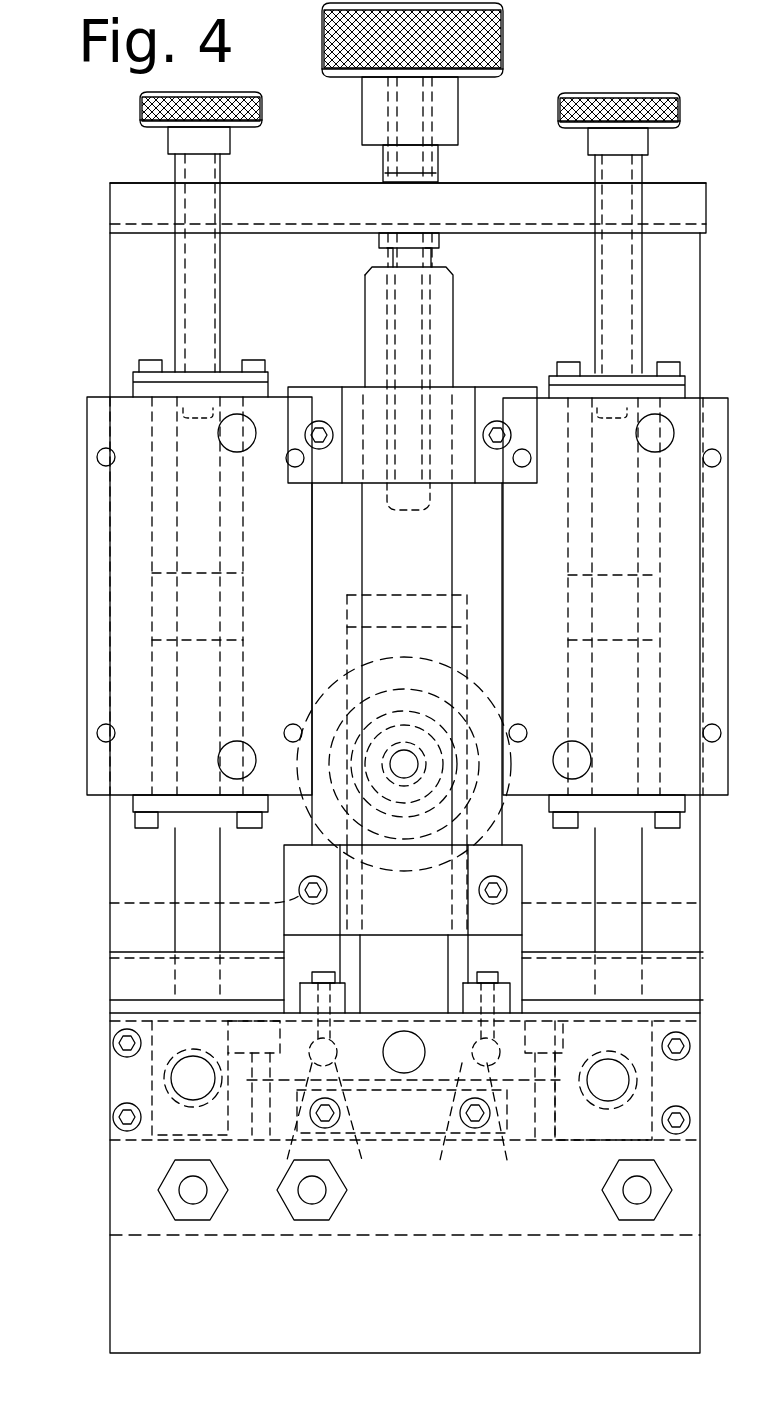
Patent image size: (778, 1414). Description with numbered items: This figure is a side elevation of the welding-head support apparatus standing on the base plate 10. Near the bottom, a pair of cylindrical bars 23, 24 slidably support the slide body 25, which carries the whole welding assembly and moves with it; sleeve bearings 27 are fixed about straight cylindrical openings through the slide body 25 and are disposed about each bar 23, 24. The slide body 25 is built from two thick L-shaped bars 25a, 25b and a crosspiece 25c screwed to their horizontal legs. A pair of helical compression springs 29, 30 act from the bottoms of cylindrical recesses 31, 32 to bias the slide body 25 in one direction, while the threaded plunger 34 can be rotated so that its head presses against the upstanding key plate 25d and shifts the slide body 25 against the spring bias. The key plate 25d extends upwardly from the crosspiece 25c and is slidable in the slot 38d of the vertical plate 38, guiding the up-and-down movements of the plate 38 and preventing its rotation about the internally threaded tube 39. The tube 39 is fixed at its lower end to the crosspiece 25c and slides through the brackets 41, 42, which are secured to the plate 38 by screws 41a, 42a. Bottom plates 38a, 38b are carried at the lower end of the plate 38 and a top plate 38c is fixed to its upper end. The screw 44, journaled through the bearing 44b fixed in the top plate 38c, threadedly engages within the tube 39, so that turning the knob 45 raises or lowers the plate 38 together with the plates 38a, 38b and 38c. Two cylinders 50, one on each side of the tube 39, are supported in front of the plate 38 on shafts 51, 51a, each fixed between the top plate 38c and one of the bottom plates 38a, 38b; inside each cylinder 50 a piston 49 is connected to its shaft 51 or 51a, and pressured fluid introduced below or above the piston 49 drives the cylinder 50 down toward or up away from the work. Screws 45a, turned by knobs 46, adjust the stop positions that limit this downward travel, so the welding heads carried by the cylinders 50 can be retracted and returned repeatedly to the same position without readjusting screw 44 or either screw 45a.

The base plate 10 is at (258, 1235).
The bar 23 is at (170, 1080).
The bar 24 is at (630, 1080).
The slide body 25 is at (110, 1025).
The bar 25a is at (178, 1128).
The bar 25b is at (578, 1140).
The crosspiece 25c is at (378, 1030).
The key plate 25d is at (468, 627).
The sleeve bearings 27 is at (110, 1104).
The helical compression spring 29 is at (338, 1130).
The helical compression spring 30 is at (465, 1128).
The cylindrical recess 31 is at (300, 1136).
The cylindrical recess 32 is at (492, 1135).
The threaded plunger 34 is at (420, 764).
The plate 38 is at (514, 326).
The bottom plate 38a is at (110, 984).
The bottom plate 38b is at (703, 978).
The plate 38c is at (480, 183).
The slot 38d is at (455, 600).
The internally threaded tube 39 is at (365, 337).
The bracket 41 is at (465, 387).
The screws 41a is at (275, 437).
The bracket 42 is at (510, 890).
The screws 42a is at (300, 885).
The screw 44 is at (432, 315).
The bearing 44b is at (440, 180).
The knob 45 is at (503, 45).
The screws 45a is at (222, 287).
The knobs 46 is at (262, 103).
The piston 49 is at (237, 603).
The cylinders 50 is at (87, 548).
The shaft 51 is at (175, 285).
The shaft 51a is at (642, 295).